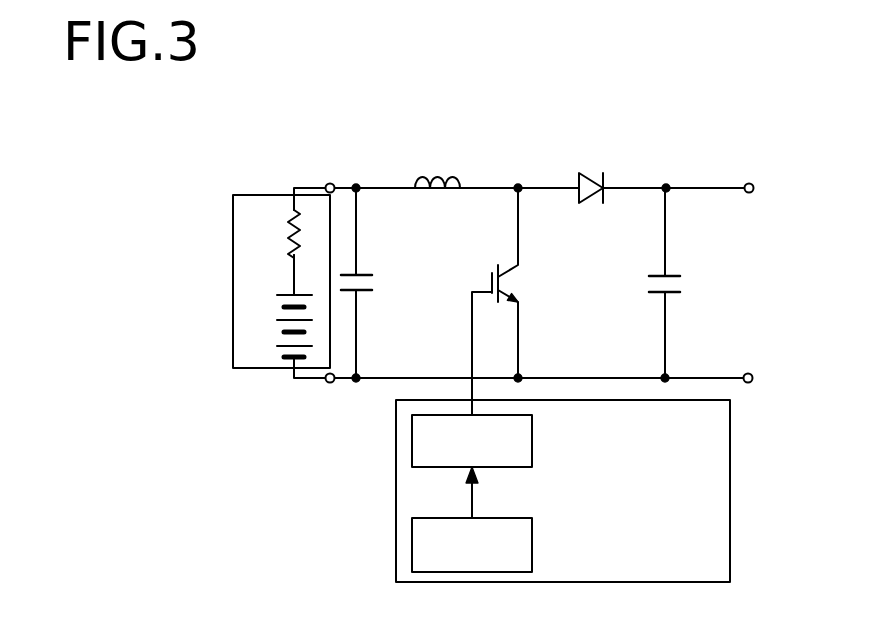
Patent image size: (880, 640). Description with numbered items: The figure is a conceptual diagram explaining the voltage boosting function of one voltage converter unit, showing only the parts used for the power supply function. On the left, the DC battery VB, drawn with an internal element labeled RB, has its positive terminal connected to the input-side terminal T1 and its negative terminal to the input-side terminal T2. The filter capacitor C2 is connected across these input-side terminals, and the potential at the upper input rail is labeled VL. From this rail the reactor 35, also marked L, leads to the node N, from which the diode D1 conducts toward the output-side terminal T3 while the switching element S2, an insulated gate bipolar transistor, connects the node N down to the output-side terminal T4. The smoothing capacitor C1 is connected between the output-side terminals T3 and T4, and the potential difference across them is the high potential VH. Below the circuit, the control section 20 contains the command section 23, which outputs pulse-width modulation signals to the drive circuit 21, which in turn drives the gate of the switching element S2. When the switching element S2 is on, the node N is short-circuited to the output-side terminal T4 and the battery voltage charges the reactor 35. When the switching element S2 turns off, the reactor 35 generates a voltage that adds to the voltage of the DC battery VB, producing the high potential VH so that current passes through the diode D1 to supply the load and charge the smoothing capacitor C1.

The control section 20 is at (731, 563).
The drive circuit 21 is at (533, 462).
The command section 23 is at (533, 552).
The reactor 35 is at (428, 174).
The DC battery VB is at (244, 194).
The internal resistance of battery RB is at (268, 234).
The input-side terminal T1 is at (327, 183).
The input-side terminal T2 is at (330, 383).
The output-side terminal T3 is at (749, 183).
The output-side terminal T4 is at (748, 373).
The low-voltage node VL is at (355, 174).
The high potential VH is at (666, 173).
The node N is at (518, 185).
The filter capacitor C2 is at (369, 285).
The smoothing capacitor C1 is at (676, 285).
The inductor L is at (436, 218).
The switching element S2 is at (497, 265).
The diode D1 is at (607, 180).